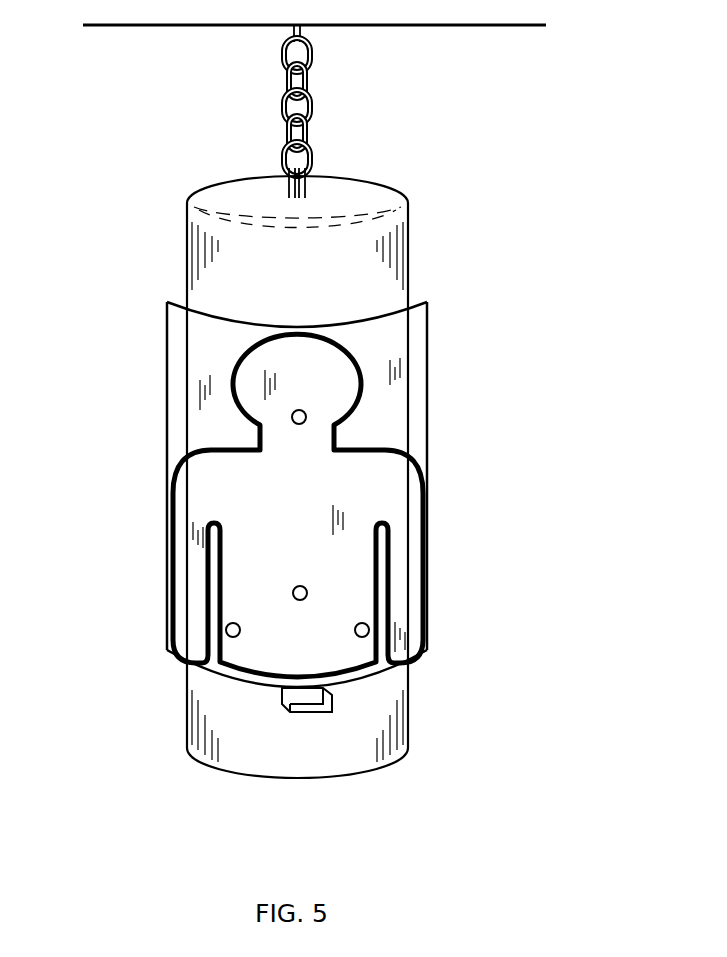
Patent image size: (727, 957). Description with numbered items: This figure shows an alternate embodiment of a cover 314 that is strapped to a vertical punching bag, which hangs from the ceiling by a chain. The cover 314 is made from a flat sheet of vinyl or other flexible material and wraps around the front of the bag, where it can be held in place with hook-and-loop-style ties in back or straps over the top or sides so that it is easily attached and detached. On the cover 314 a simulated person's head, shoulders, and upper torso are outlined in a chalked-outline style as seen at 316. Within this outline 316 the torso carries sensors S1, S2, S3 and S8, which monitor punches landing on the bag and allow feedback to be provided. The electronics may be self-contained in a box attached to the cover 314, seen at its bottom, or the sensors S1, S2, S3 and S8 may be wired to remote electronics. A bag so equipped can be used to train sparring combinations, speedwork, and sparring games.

The cover 314 is at (415, 412).
The simulated person's outline 316 is at (356, 357).
The sensor S1 is at (369, 630).
The sensor S2 is at (226, 630).
The sensor S3 is at (306, 417).
The sensor S8 is at (293, 593).